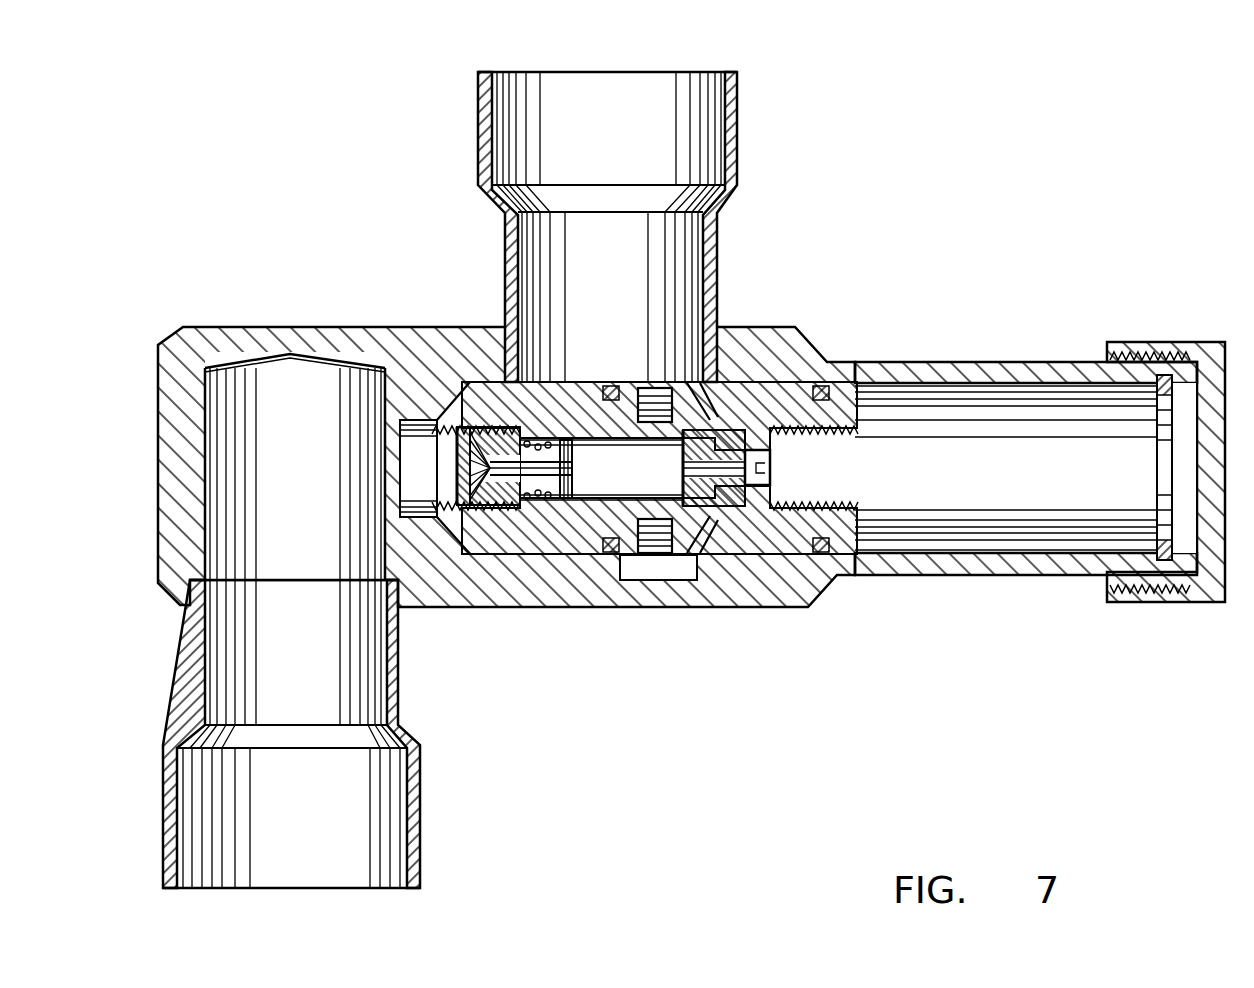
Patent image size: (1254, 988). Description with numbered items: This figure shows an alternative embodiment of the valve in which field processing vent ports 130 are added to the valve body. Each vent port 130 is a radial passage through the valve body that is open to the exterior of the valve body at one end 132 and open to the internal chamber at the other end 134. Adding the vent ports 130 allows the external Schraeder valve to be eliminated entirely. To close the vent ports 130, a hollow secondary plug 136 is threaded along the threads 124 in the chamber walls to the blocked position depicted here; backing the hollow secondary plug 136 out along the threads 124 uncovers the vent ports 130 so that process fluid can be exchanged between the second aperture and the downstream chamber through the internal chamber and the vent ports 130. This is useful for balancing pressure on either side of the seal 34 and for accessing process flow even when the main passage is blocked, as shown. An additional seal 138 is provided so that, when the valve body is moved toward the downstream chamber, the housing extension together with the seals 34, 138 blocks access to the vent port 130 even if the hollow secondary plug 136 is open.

The seal 34 is at (808, 606).
The threads 124 is at (857, 490).
The field processing vent ports 130 is at (662, 383).
The one end of the vent port 132 is at (693, 382).
The other end of the vent port 134 is at (712, 378).
The hollow secondary plug 136 is at (753, 500).
The additional seal 138 is at (612, 552).